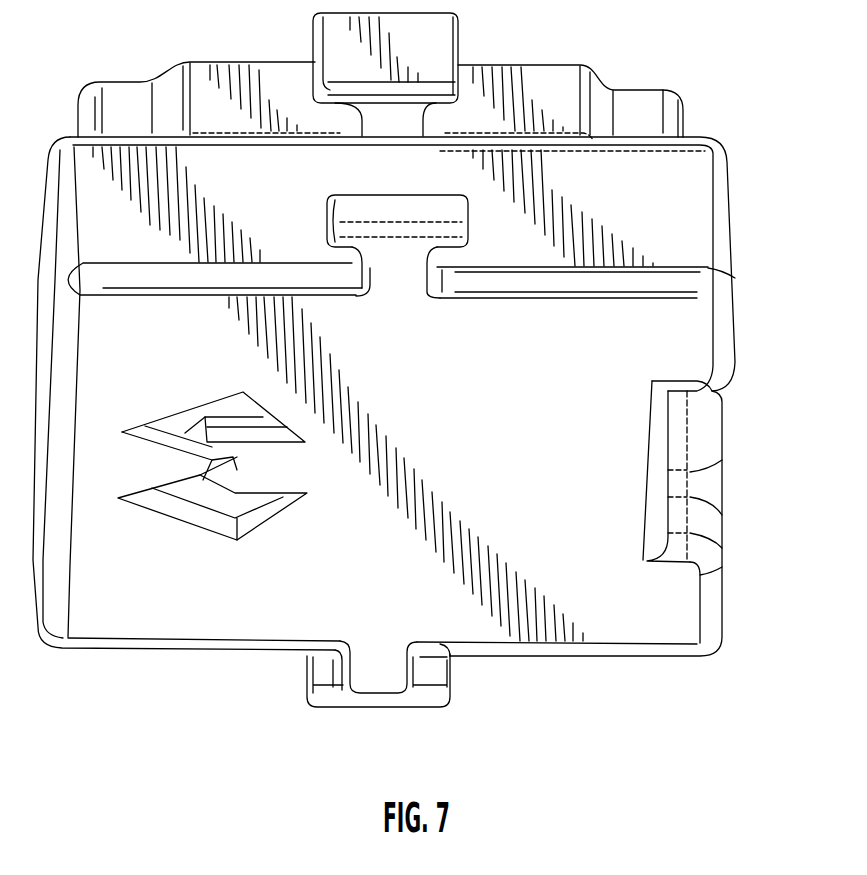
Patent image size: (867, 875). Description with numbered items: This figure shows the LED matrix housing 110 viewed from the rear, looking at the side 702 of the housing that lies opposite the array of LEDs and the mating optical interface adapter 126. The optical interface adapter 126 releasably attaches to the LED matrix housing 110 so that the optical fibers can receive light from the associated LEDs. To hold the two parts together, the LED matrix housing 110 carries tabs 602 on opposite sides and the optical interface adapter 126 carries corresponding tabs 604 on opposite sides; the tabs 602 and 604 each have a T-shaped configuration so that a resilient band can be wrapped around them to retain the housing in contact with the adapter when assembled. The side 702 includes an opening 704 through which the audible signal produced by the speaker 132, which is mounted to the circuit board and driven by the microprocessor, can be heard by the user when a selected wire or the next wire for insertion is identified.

The LED matrix housing 110 is at (728, 228).
The optical interface adapter 126 is at (684, 117).
The speaker 132 is at (212, 455).
The tabs 602 is at (462, 213).
The tabs 604 is at (459, 30).
The side 702 is at (515, 628).
The opening 704 is at (262, 406).